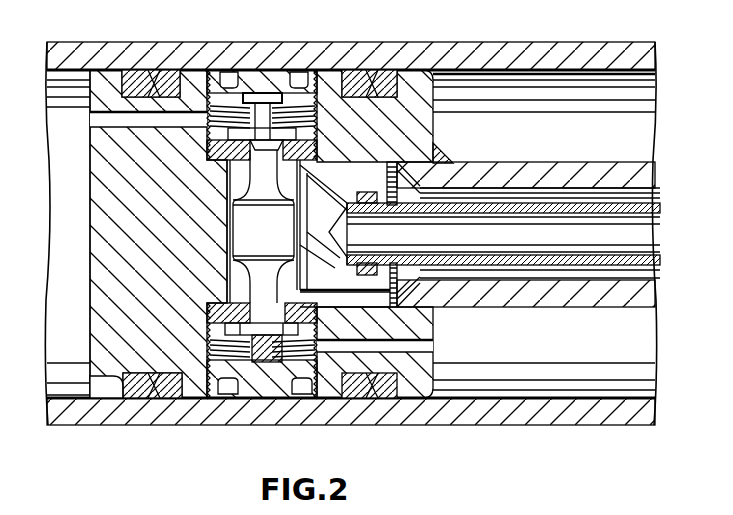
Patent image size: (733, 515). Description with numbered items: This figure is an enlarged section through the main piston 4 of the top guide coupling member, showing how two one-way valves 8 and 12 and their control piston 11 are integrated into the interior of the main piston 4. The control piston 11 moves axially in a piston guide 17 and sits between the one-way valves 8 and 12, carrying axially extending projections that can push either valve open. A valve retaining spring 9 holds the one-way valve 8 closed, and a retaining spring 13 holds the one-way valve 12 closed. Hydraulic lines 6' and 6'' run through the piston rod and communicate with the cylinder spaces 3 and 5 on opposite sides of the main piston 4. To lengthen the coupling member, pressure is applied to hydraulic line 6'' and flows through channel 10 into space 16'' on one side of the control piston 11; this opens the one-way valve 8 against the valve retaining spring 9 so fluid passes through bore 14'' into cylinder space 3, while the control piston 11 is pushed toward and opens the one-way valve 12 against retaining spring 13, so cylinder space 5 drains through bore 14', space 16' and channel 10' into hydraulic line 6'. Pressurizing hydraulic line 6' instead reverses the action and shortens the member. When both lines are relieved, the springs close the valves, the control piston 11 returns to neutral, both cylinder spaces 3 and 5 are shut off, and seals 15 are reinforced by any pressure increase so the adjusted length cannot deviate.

The cylinder space 3 is at (60, 135).
The main piston 4 is at (108, 166).
The cylinder space 5 is at (487, 122).
The hydraulic line 6' is at (503, 217).
The hydraulic line 6'' is at (494, 192).
The one-way valve 8 is at (242, 183).
The valve retaining spring 9 is at (250, 100).
The channel 10 is at (345, 225).
The channel 10' is at (415, 234).
The control piston 11 is at (240, 248).
The one-way valve 12 is at (212, 318).
The retaining spring 13 is at (253, 397).
The bore 14' is at (395, 349).
The bore 14'' is at (148, 141).
The seals 15 is at (360, 388).
The space 16' is at (286, 327).
The space 16'' is at (247, 170).
The piston guide 17 is at (310, 245).